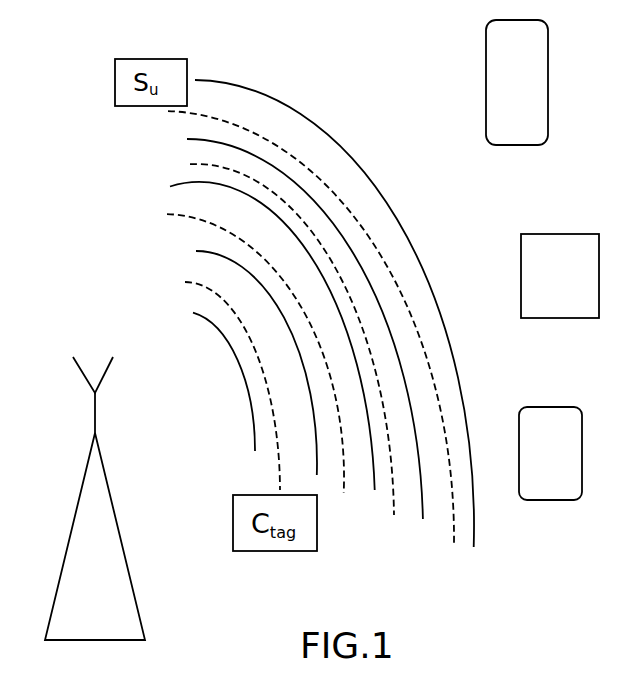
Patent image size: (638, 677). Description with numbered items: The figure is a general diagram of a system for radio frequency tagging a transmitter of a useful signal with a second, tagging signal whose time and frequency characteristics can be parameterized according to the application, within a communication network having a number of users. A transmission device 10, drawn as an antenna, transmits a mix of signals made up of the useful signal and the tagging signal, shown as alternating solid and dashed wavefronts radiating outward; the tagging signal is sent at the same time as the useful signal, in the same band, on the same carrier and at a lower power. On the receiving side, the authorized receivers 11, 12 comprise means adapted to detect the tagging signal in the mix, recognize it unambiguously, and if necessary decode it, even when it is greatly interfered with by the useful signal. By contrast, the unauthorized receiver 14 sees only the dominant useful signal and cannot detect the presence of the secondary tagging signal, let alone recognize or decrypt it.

The transmission device 10 is at (80, 497).
The authorized receiver 11 is at (582, 463).
The authorized receiver 12 is at (486, 82).
The unauthorized receiver 14 is at (521, 272).